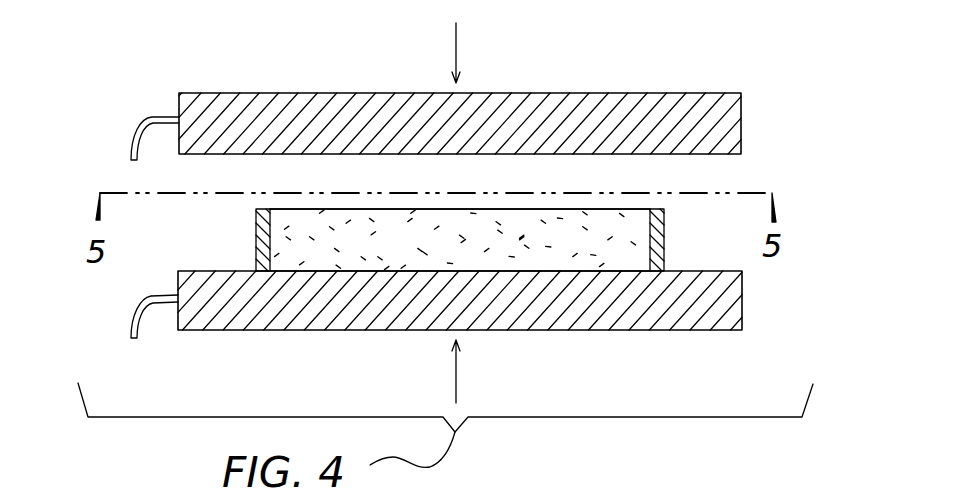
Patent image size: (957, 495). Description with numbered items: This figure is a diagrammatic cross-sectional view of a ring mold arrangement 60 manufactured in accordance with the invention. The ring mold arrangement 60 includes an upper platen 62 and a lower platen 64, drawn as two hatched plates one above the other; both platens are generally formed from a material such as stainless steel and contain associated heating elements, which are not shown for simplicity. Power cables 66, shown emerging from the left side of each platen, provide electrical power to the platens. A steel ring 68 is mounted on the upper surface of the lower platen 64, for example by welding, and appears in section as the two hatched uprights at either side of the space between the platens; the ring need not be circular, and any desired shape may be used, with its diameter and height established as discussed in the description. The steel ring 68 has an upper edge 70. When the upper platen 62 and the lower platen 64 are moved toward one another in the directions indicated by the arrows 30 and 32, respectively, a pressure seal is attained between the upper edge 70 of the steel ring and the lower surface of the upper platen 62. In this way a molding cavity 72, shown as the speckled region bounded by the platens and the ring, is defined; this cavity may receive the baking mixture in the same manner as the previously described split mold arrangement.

The arrow 30 is at (456, 40).
The arrow 32 is at (456, 383).
The ring mold arrangement 60 is at (446, 189).
The upper platen 62 is at (741, 93).
The lower platen 64 is at (742, 305).
The power cables 66 is at (148, 118).
The steel ring 68 is at (664, 243).
The upper edge 70 is at (655, 209).
The molding cavity 72 is at (523, 245).